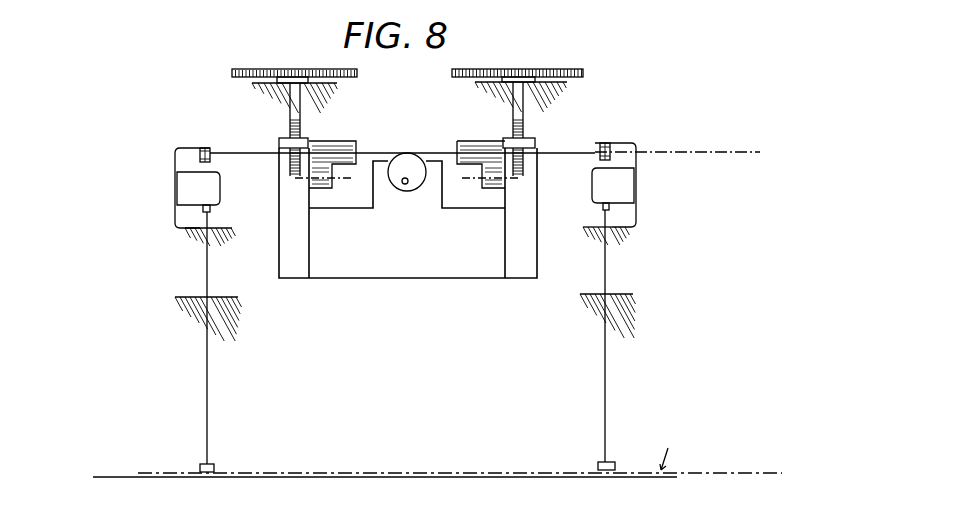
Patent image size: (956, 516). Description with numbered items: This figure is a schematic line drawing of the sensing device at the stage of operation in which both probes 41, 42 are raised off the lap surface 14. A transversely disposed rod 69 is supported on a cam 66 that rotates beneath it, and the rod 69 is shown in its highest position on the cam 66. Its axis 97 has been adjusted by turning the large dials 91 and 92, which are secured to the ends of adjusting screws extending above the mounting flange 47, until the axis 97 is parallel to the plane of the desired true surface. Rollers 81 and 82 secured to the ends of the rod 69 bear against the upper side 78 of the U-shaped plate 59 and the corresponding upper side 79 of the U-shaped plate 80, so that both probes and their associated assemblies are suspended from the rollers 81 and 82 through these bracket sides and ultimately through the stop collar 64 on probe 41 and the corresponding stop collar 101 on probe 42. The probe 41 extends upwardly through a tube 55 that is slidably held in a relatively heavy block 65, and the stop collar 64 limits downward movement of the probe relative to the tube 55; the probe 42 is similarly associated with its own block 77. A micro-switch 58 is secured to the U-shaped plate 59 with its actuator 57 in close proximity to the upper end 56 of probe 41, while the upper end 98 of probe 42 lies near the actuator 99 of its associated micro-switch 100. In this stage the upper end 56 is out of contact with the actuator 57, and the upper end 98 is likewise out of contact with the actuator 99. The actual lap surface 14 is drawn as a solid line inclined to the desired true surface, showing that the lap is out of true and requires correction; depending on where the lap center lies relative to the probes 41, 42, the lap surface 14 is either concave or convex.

The dial 92 is at (250, 69).
The dial 91 is at (570, 69).
The mounting flange 47 is at (265, 84).
The rod 69 is at (376, 152).
The axis of rod 97 is at (709, 151).
The cam 66 is at (413, 190).
The upper side of U-shaped plate 79 is at (185, 147).
The roller 82 is at (207, 148).
The U-shaped plate 80 is at (175, 180).
The micro-switch 100 is at (220, 180).
The actuator 99 is at (212, 208).
The upper end of probe 98 is at (212, 228).
The stop collar 101 is at (200, 228).
The block 77 is at (202, 316).
The probe 42 is at (210, 390).
The upper side of U-shaped plate 78 is at (624, 143).
The roller 81 is at (607, 143).
The U-shaped plate 59 is at (646, 190).
The micro-switch 58 is at (592, 177).
The actuator 57 is at (603, 206).
The upper end of rod 56 is at (600, 218).
The stop collar 64 is at (612, 226).
The tube 55 is at (615, 243).
The block 65 is at (625, 300).
The probe 41 is at (607, 387).
The lap surface 14 is at (600, 478).